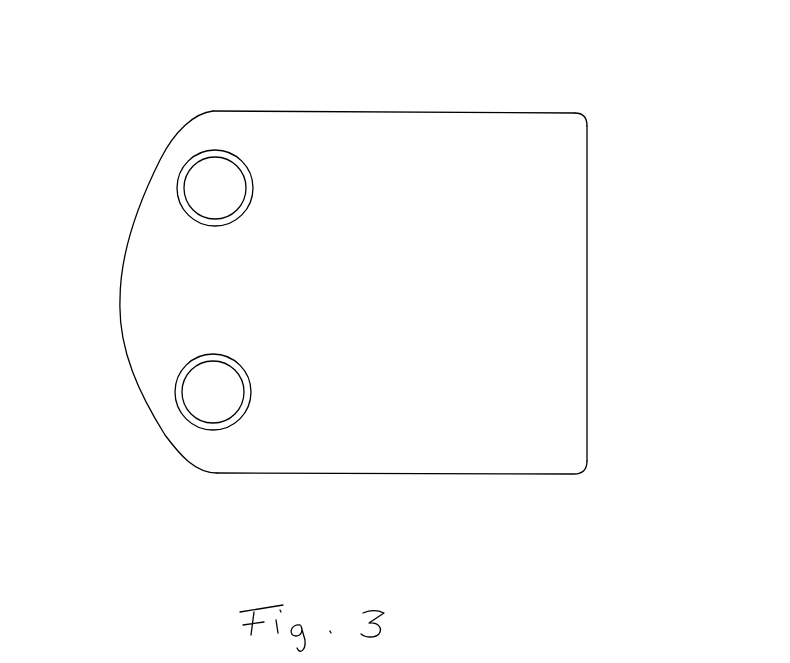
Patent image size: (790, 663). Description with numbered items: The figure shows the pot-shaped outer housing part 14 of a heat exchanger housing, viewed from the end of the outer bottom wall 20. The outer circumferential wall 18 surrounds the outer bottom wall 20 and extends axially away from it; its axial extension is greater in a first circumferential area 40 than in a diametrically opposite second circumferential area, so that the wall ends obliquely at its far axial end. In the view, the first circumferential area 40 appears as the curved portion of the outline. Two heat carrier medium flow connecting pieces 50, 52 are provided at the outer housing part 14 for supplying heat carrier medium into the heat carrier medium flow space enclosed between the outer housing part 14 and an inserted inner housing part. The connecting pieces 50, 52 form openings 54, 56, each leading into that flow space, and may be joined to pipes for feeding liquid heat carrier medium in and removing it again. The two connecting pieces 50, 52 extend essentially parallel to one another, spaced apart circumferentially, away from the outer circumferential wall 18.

The outer housing part 14 is at (373, 238).
The outer circumferential wall 18 is at (497, 50).
The outer bottom wall 20 is at (620, 248).
The first circumferential area 40 is at (140, 292).
The heat carrier medium flow connecting piece 50 is at (200, 153).
The heat carrier medium flow connecting piece 52 is at (220, 432).
The opening 54 is at (215, 178).
The opening 56 is at (198, 392).